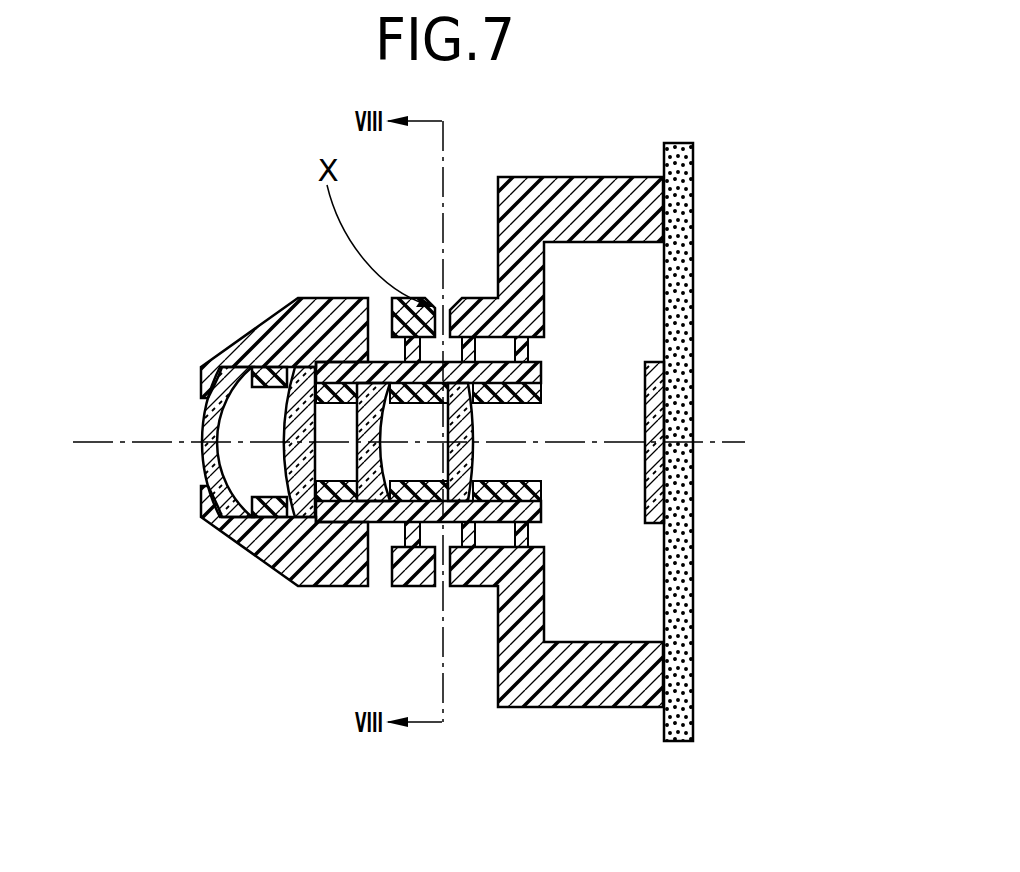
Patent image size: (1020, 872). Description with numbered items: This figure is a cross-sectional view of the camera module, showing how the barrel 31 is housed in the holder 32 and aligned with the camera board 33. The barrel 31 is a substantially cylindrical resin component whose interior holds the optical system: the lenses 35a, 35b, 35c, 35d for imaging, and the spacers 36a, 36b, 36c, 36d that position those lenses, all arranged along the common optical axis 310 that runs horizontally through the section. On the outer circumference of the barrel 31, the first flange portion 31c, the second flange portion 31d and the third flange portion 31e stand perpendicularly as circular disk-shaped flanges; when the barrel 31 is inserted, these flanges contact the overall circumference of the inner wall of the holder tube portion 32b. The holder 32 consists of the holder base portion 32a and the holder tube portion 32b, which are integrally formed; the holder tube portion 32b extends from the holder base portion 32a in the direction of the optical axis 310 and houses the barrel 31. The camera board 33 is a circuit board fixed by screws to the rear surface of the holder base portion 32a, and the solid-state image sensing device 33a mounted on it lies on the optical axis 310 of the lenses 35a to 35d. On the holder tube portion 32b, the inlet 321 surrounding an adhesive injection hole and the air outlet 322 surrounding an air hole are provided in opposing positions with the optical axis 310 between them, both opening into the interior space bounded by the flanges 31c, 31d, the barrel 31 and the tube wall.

The barrel 31 is at (405, 503).
The first flange portion 31c is at (416, 587).
The second flange portion 31d is at (477, 343).
The third flange portion 31e is at (529, 352).
The optical axis 310 is at (88, 445).
The holder 32 is at (568, 464).
The holder base portion 32a is at (503, 785).
The holder tube portion 32b is at (452, 567).
The inlet 321 is at (427, 297).
The air outlet 322 is at (468, 588).
The camera board 33 is at (680, 217).
The solid-state image sensing device 33a is at (665, 382).
The lens 35a is at (205, 417).
The lens 35b is at (298, 378).
The lens 35c is at (352, 588).
The lens 35d is at (472, 455).
The spacer 36a is at (262, 366).
The spacer 36b is at (358, 392).
The spacer 36c is at (535, 506).
The spacer 36d is at (530, 392).